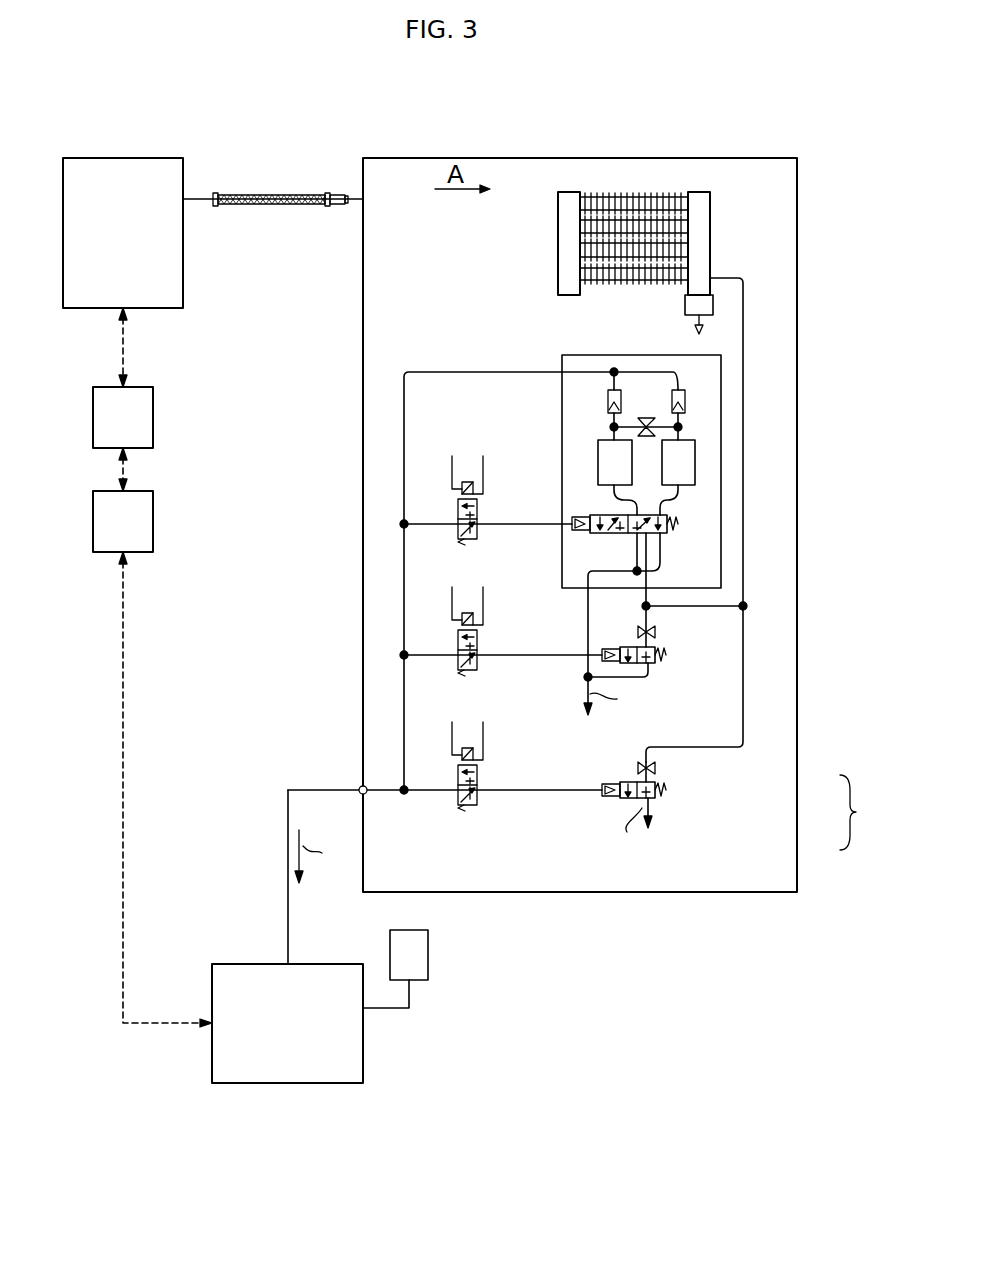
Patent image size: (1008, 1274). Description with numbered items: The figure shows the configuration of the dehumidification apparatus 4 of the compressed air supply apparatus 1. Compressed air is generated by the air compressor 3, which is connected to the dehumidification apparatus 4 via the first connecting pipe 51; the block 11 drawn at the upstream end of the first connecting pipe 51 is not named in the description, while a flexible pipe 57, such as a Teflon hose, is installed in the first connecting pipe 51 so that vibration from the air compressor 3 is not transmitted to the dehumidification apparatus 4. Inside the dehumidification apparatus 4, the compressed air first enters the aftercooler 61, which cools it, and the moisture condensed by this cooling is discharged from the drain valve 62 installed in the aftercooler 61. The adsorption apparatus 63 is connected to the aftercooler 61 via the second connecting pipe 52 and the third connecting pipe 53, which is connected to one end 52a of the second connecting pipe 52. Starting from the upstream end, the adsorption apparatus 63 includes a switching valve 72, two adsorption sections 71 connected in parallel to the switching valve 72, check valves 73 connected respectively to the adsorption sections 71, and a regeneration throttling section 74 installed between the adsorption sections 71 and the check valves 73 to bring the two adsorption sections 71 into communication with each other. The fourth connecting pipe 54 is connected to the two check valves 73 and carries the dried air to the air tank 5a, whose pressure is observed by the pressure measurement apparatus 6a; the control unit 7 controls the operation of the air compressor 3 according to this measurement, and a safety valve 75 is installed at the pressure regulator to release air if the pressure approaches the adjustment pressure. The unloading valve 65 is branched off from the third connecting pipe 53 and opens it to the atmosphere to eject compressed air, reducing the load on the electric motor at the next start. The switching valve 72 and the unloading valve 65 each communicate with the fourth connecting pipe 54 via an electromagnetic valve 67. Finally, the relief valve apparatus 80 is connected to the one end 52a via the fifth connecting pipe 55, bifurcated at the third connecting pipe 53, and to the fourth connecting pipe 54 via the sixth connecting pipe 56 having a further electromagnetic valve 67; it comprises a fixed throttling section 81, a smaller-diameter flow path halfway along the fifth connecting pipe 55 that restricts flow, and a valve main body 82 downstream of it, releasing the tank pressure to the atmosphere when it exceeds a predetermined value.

The compressed air supply apparatus 1 is at (108, 1052).
The air compressor 3 is at (748, 122).
The dehumidification apparatus 4 is at (552, 158).
The air tank 5a is at (363, 1057).
The pressure measurement apparatus 6a is at (153, 522).
The control unit 7 is at (153, 417).
The hydrogen tank 11 is at (120, 158).
The first connecting pipe 51 is at (197, 195).
The second connecting pipe 52 is at (743, 370).
The one end of the second connecting pipe 52a is at (746, 606).
The third connecting pipe 53 is at (703, 608).
The fourth connecting pipe 54 is at (465, 372).
The fifth connecting pipe 55 is at (743, 717).
The sixth connecting pipe 56 is at (542, 793).
The flexible pipe 57 is at (274, 195).
The aftercooler 61 is at (700, 192).
The drain valve 62 is at (713, 308).
The adsorption apparatus 63 is at (721, 505).
The unloading valve 65 is at (653, 667).
The electromagnetic valve 67 is at (483, 464).
The adsorption section 71 is at (598, 455).
The switching valve 72 is at (655, 540).
The check valve 73 is at (608, 400).
The regeneration throttling section 74 is at (648, 417).
The safety valve 75 is at (430, 962).
The relief valve apparatus 80 is at (867, 812).
The fixed throttling section 81 is at (656, 768).
The valve main body 82 is at (655, 805).